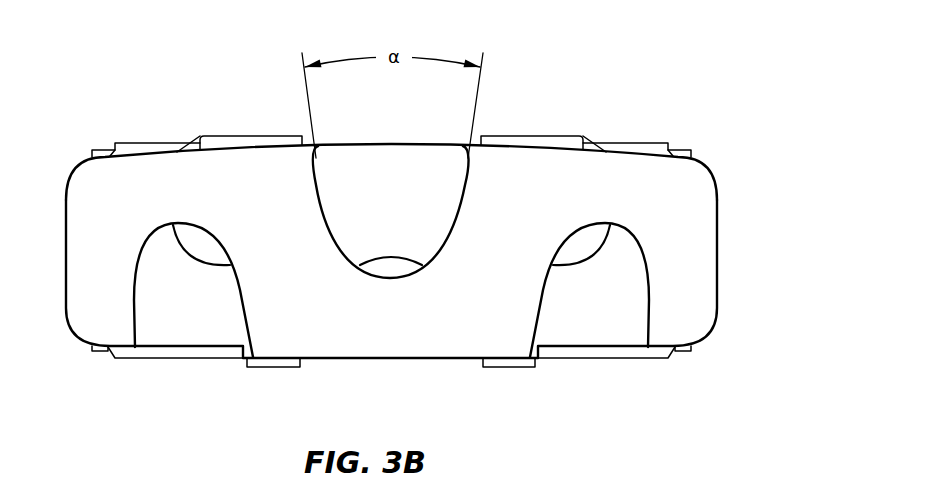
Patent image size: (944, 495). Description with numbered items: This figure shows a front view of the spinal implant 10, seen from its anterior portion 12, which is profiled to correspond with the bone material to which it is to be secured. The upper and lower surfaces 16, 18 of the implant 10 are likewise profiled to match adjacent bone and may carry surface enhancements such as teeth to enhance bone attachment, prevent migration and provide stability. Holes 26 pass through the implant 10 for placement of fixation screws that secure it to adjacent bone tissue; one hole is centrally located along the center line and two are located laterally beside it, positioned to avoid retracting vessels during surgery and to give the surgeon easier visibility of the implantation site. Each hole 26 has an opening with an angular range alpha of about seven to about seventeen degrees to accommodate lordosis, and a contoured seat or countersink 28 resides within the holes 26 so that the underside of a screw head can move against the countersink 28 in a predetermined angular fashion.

The spinal implant 10 is at (710, 75).
The anterior portion 12 is at (325, 318).
The upper surface 16 is at (542, 135).
The lower surface 18 is at (503, 368).
The holes 26 is at (350, 187).
The countersink 28 is at (190, 298).